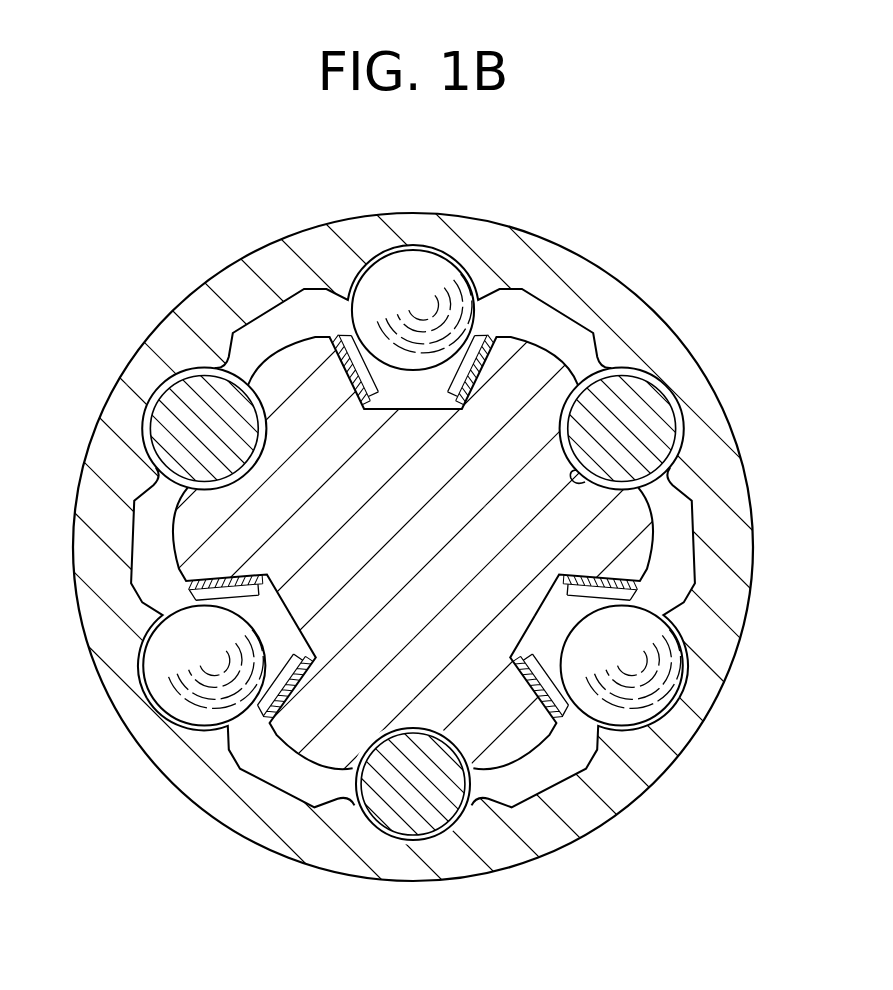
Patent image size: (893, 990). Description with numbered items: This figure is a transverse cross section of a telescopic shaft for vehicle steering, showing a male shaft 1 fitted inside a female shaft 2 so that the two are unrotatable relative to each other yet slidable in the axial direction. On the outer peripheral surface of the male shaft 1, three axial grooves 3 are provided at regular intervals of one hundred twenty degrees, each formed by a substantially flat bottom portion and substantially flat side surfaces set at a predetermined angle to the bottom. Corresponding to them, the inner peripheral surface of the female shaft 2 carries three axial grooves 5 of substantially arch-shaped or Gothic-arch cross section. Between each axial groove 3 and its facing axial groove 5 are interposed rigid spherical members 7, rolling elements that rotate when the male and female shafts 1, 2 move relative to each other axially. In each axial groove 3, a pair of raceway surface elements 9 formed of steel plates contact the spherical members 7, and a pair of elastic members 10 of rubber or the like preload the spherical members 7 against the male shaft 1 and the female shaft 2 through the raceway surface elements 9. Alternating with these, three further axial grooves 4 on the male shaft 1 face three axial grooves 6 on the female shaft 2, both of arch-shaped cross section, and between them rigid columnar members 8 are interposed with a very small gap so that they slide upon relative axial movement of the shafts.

The male shaft 1 is at (226, 330).
The female shaft 2 is at (243, 268).
The axial groove 3 is at (372, 411).
The axial groove 4 is at (576, 478).
The axial groove 5 is at (335, 256).
The axial groove 6 is at (626, 384).
The spherical member 7 is at (423, 266).
The columnar member 8 is at (650, 430).
The raceway surface element 9 is at (489, 348).
The elastic member 10 is at (506, 332).